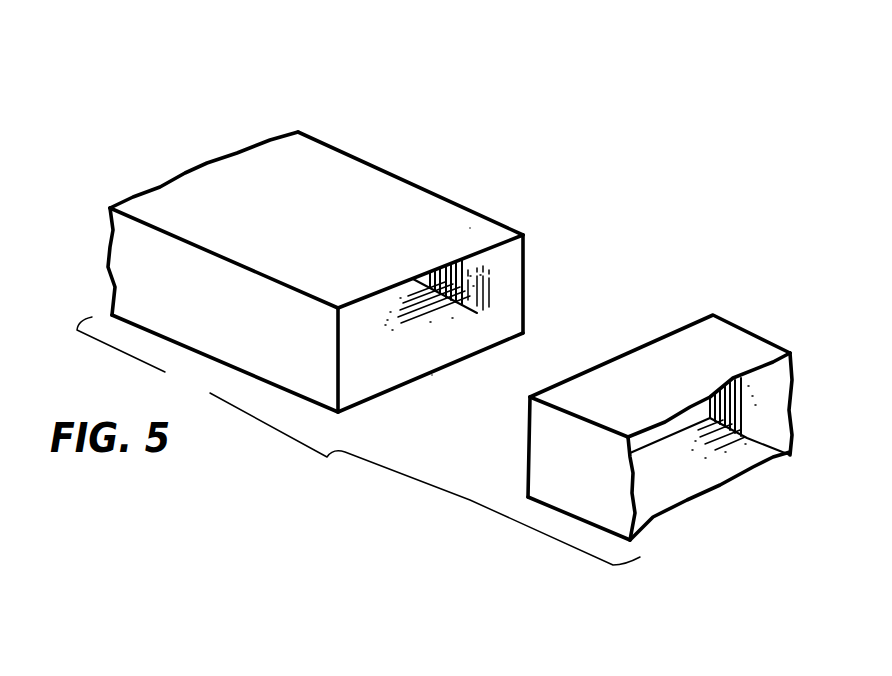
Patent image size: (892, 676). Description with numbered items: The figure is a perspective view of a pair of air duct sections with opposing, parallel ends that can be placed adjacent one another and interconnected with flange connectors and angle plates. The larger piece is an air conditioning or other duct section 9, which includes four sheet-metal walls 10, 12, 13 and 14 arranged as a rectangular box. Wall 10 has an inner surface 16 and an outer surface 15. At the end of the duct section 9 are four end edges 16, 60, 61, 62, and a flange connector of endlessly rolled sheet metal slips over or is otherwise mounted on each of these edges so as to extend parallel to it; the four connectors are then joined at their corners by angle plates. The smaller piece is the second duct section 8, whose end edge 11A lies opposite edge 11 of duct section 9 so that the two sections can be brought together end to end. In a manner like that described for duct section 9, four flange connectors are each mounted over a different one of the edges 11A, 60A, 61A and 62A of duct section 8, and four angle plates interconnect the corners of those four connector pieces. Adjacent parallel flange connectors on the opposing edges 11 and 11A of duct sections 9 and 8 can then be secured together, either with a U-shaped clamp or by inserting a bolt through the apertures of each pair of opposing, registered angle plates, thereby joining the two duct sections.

The duct section 8 is at (684, 365).
The duct section 9 is at (339, 221).
The sheet-metal wall 10 is at (339, 260).
The edge 11 is at (362, 297).
The edge 11A is at (602, 365).
The sheet-metal wall 12 is at (265, 348).
The sheet-metal wall 13 is at (432, 380).
The sheet-metal wall 14 is at (528, 284).
The outer surface 15 is at (320, 177).
The inner surface 16 is at (492, 245).
The end edge 60 is at (336, 357).
The edge 60A is at (532, 483).
The end edge 61 is at (403, 387).
The edge 61A is at (673, 436).
The end edge 62 is at (520, 308).
The edge 62A is at (766, 415).